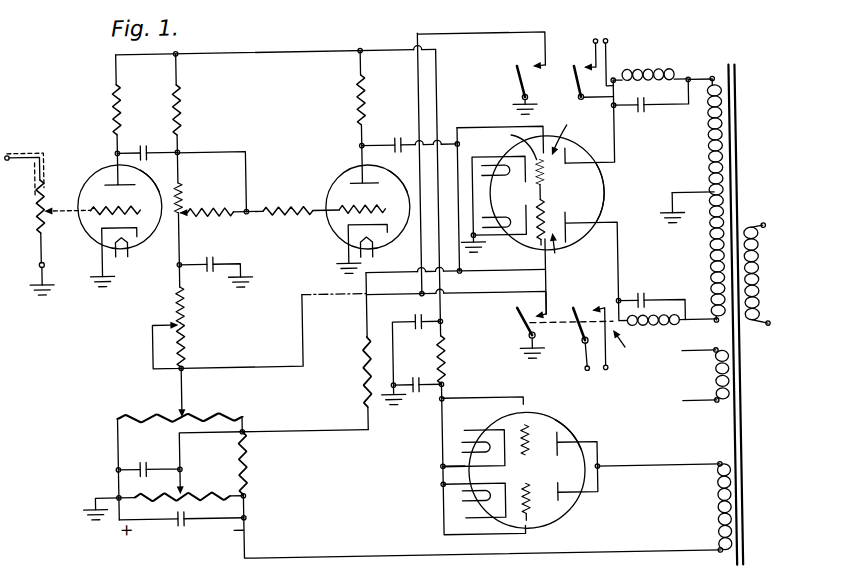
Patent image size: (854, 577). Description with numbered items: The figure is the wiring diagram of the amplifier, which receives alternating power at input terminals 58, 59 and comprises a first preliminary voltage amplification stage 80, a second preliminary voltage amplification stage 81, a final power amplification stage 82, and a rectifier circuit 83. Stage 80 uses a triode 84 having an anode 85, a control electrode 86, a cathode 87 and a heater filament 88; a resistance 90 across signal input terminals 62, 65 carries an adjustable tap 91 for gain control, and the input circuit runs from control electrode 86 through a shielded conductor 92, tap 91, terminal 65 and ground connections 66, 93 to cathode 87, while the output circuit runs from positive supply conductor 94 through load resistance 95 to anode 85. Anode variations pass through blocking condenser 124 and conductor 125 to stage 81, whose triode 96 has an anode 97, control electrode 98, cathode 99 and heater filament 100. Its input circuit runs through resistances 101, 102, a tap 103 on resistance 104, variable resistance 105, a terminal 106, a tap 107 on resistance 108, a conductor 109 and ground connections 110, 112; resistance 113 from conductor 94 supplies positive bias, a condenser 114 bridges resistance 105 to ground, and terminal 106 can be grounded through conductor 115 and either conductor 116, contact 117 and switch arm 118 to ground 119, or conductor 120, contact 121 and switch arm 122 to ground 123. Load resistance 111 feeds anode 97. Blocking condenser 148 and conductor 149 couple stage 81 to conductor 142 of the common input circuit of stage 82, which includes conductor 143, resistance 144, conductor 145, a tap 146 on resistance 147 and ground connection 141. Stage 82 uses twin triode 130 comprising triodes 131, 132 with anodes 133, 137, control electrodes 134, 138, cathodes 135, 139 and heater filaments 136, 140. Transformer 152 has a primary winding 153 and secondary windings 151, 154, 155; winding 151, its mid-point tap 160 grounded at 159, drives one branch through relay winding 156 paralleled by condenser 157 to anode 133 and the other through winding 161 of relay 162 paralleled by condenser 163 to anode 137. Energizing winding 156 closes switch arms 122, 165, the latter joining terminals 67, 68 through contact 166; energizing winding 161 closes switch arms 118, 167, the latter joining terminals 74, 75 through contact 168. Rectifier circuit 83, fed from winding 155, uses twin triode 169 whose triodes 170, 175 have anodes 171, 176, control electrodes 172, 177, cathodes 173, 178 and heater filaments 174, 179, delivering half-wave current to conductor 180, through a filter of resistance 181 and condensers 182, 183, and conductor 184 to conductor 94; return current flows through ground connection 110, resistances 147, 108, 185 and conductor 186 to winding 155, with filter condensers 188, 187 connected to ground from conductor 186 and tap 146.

The power input terminal 58 is at (763, 229).
The power input terminal 59 is at (768, 332).
The input terminal 62 is at (10, 148).
The input terminal 65 is at (45, 260).
The ground connection 66 is at (34, 280).
The terminal 67 is at (600, 42).
The terminal 68 is at (612, 43).
The terminal 74 is at (582, 370).
The terminal 75 is at (605, 372).
The first preliminary voltage amplification stage 80 is at (93, 148).
The second preliminary voltage amplification stage 81 is at (335, 158).
The final power amplification stage 82 is at (652, 182).
The rectifier circuit 83 is at (639, 444).
The triode 84 is at (169, 163).
The anode 85 is at (109, 171).
The control electrode 86 is at (92, 204).
The cathode 87 is at (101, 236).
The heater filament 88 is at (134, 240).
The resistance 90 is at (40, 198).
The adjustable tap 91 is at (46, 193).
The shielded conductor 92 is at (67, 220).
The ground connection 93 is at (115, 272).
The conductor 94 is at (261, 50).
The load resistance 95 is at (123, 103).
The triode 96 is at (410, 178).
The anode 97 is at (354, 182).
The control electrode 98 is at (342, 203).
The cathode 99 is at (348, 235).
The heater filament 100 is at (381, 237).
The resistance 101 is at (293, 222).
The resistance 102 is at (217, 223).
The tap 103 is at (189, 207).
The resistance 104 is at (188, 187).
The variable resistance 105 is at (190, 301).
The terminal 106 is at (186, 363).
The tap 107 is at (178, 409).
The resistance 108 is at (180, 428).
The conductor 109 is at (115, 464).
The ground connection 110 is at (91, 492).
The load resistance 111 is at (358, 99).
The ground connection 112 is at (346, 265).
The resistance 113 is at (182, 108).
The condenser 114 is at (222, 257).
The conductor 115 is at (302, 322).
The conductor 116 is at (456, 302).
The contact 117 is at (530, 312).
The switch arm 118 is at (518, 320).
The ground 119 is at (524, 354).
The conductor 120 is at (482, 163).
The contact 121 is at (538, 62).
The switch arm 122 is at (521, 76).
The ground 123 is at (520, 106).
The blocking condenser 124 is at (146, 146).
The conductor 125 is at (249, 147).
The twin triode 130 is at (608, 202).
The triode 131 is at (564, 154).
The triode 132 is at (466, 128).
The anode 133 is at (575, 154).
The control electrode 134 is at (513, 143).
The cathode 135 is at (506, 148).
The heater filament 136 is at (497, 180).
The anode 137 is at (569, 232).
The control electrode 138 is at (544, 209).
The cathode 139 is at (552, 174).
The heater filament 140 is at (499, 210).
The ground connection 141 is at (486, 244).
The conductor 142 is at (484, 272).
The conductor 143 is at (363, 312).
The resistance 144 is at (366, 372).
The conductor 145 is at (296, 431).
The tap 146 is at (181, 487).
The resistance 147 is at (181, 505).
The blocking condenser 148 is at (398, 143).
The conductor 149 is at (453, 143).
The secondary winding 151 is at (712, 142).
The transformer 152 is at (738, 78).
The primary winding 153 is at (761, 256).
The secondary winding 154 is at (714, 380).
The secondary winding 155 is at (716, 508).
The relay winding 156 is at (664, 74).
The condenser 157 is at (650, 109).
The ground connection 159 is at (672, 216).
The mid-point tap 160 is at (714, 197).
The relay winding 161 is at (653, 329).
The relay 162 is at (592, 343).
The condenser 163 is at (642, 305).
The switch arm 165 is at (586, 98).
The contact 166 is at (586, 66).
The switch arm 167 is at (580, 342).
The contact 168 is at (590, 309).
The twin triode 169 is at (558, 422).
The first triode 170 is at (531, 427).
The anode 171 is at (558, 440).
The control electrode 172 is at (482, 459).
The cathode 173 is at (482, 436).
The heater filament 174 is at (485, 434).
The second triode 175 is at (556, 516).
The anode 176 is at (578, 500).
The control electrode 177 is at (521, 524).
The cathode 178 is at (496, 514).
The heater filament 179 is at (484, 506).
The conductor 180 is at (440, 470).
The resistance 181 is at (444, 363).
The condenser 182 is at (417, 317).
The condenser 183 is at (410, 377).
The conductor 184 is at (445, 320).
The resistance 185 is at (245, 467).
The conductor 186 is at (338, 554).
The filter condenser 187 is at (150, 463).
The filter condenser 188 is at (184, 519).